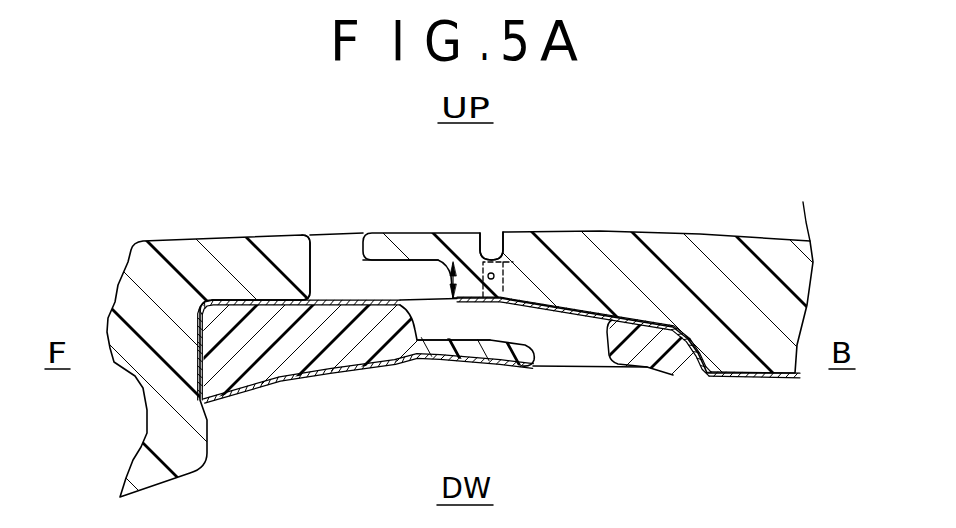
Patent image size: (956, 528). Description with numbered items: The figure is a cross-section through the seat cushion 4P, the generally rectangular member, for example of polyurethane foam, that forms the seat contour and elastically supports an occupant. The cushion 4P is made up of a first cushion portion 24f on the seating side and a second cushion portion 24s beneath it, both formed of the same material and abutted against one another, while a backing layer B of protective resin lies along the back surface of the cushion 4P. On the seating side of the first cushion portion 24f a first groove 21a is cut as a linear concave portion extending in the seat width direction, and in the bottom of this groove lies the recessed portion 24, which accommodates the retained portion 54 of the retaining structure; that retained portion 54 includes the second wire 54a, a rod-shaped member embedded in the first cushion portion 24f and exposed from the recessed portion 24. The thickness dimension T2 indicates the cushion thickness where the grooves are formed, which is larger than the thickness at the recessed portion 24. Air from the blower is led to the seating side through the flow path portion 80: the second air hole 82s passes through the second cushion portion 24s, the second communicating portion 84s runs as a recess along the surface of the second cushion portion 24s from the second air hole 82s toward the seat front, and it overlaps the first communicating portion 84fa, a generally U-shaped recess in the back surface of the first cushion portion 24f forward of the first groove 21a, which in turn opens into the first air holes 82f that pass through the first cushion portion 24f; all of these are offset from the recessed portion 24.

The cushion 4P is at (692, 234).
The first groove 21a is at (489, 250).
The recessed portion 24 is at (513, 262).
The first cushion portion 24f is at (260, 250).
The second cushion portion 24s is at (260, 357).
The backing layer B is at (321, 380).
The retained portion 54 is at (596, 377).
The second wire 54a is at (491, 280).
The flow path portion 80 is at (483, 282).
The first air holes 82f is at (329, 255).
The first communicating portion 84fa is at (404, 288).
The second communicating portion 84s is at (445, 319).
The second air hole 82s is at (564, 352).
The thickness dimension T2 is at (450, 277).